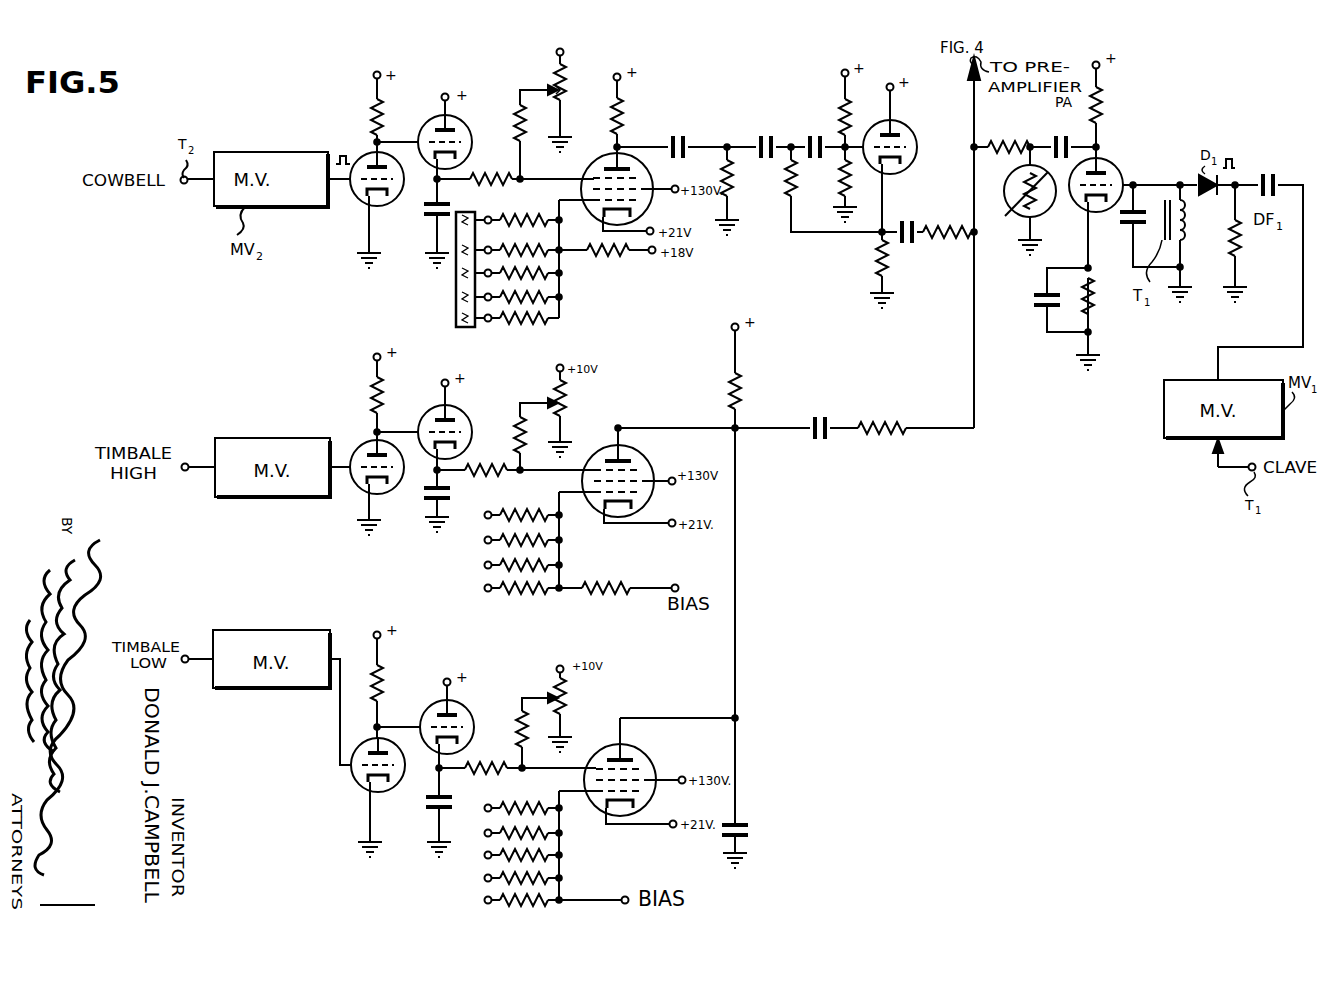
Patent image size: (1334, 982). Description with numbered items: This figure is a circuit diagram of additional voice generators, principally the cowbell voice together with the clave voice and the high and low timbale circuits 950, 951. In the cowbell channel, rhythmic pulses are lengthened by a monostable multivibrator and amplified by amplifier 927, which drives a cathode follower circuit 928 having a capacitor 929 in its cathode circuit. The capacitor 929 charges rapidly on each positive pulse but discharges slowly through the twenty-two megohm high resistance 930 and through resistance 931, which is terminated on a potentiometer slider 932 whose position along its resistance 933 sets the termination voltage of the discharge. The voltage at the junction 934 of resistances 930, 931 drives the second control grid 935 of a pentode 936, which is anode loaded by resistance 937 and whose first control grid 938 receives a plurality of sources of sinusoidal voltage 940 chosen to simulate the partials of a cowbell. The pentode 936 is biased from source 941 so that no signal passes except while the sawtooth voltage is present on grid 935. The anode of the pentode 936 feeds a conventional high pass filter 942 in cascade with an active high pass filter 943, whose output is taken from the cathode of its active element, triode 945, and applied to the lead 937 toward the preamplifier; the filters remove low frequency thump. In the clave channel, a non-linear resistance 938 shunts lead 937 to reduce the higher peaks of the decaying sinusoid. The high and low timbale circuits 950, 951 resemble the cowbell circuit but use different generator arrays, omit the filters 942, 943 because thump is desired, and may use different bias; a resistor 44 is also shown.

The resistor 44 is at (728, 402).
The amplifier 927 is at (362, 204).
The cathode follower circuit 928 is at (470, 118).
The capacitor 929 is at (427, 208).
The high resistance 930 is at (503, 176).
The resistance 931 is at (518, 128).
The potentiometer slider 932 is at (548, 88).
The potentiometer resistance 933 is at (568, 80).
The junction 934 is at (521, 212).
The second control grid 935 is at (644, 162).
The pentode 936 is at (600, 160).
The anode load resistance 937 is at (624, 118).
The first control grid 938 is at (594, 210).
The sources of sinusoidal voltage 940 is at (432, 320).
The bias source 941 is at (662, 254).
The high pass filter 942 is at (730, 144).
The active high pass filter 943 is at (924, 210).
The triode 945 is at (914, 143).
The high timbale circuit 950 is at (420, 583).
The low timbale circuit 951 is at (335, 843).